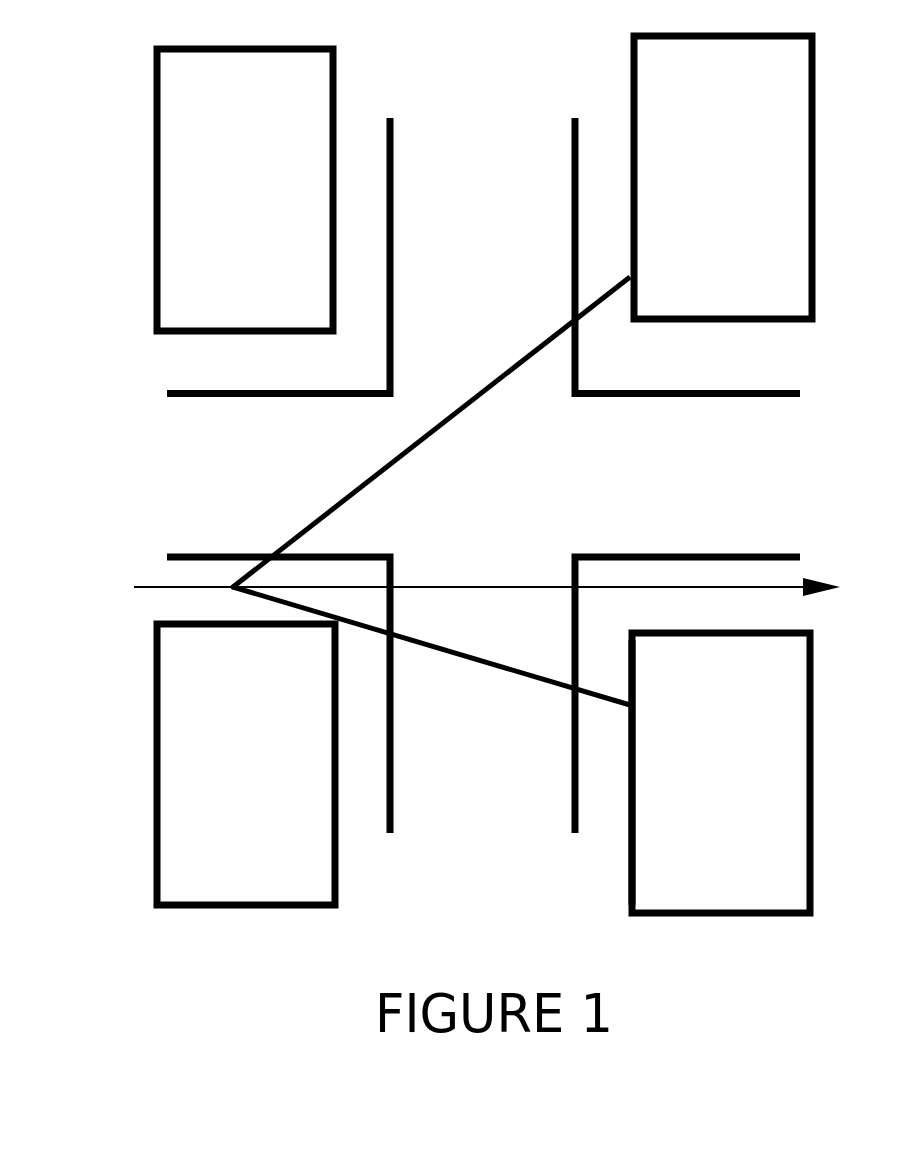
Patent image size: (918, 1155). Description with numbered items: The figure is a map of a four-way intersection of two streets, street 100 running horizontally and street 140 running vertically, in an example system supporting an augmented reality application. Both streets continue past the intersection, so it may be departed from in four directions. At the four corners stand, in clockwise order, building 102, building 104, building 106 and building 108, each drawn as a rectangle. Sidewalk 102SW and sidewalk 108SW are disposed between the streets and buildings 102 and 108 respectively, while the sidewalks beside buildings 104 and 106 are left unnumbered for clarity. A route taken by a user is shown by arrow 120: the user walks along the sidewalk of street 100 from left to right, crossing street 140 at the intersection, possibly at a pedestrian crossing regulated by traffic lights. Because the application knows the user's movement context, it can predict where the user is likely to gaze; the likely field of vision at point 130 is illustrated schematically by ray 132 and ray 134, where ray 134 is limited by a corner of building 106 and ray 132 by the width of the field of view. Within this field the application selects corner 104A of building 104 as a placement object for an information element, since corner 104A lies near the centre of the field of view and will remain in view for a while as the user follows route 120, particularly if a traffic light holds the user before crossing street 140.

The street 100 is at (741, 476).
The building 102 is at (723, 177).
The sidewalk 102SW is at (687, 256).
The building 104 is at (721, 773).
The corner of building 104A is at (634, 670).
The building 106 is at (246, 764).
The building 108 is at (245, 190).
The sidewalk 108SW is at (278, 256).
The arrow 120 is at (158, 585).
The point 130 is at (233, 585).
The ray 132 is at (497, 380).
The ray 134 is at (462, 658).
The street 140 is at (477, 158).